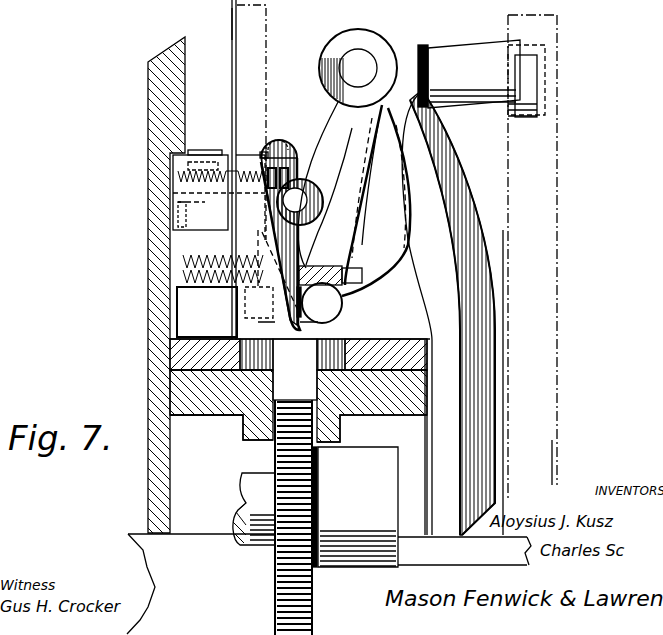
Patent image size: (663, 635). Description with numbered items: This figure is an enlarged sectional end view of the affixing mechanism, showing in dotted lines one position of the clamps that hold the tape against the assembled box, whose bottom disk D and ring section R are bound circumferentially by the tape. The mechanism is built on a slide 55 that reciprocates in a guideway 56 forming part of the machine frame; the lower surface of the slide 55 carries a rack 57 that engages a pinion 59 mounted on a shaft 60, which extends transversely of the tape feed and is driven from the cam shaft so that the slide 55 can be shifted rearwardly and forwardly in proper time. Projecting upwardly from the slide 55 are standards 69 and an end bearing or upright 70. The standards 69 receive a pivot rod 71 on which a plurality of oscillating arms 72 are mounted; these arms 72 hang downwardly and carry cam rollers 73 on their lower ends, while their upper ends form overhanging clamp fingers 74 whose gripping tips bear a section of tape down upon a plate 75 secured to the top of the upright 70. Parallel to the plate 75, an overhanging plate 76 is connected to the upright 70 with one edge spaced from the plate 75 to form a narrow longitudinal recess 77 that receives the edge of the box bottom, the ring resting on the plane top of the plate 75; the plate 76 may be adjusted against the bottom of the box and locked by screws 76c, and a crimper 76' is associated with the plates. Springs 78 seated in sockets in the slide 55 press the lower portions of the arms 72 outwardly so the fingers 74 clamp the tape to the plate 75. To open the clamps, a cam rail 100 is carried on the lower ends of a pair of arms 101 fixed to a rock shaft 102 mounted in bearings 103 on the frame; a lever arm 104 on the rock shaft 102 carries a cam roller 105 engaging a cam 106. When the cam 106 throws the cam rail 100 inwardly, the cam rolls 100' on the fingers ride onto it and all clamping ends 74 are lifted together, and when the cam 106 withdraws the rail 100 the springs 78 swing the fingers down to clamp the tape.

The disk D is at (231, 22).
The ring section R is at (270, 22).
The slide 55 is at (270, 348).
The guideway 56 is at (185, 352).
The rack 57 is at (295, 369).
The pinion 59 is at (293, 493).
The shaft 60 is at (248, 490).
The standards 69 is at (322, 200).
The end bearing or upright 70 is at (180, 257).
The pivot rod 71 is at (297, 203).
The oscillating arms 72 is at (312, 243).
The cam rollers 73 is at (286, 330).
The clamp fingers 74 is at (270, 150).
The plate 75 is at (288, 150).
The overhanging plate 76 is at (186, 189).
The cover plate 76' is at (167, 134).
The center and top screws 76c is at (298, 163).
The longitudinal recess 77 is at (232, 158).
The springs 78 is at (180, 273).
The cam rail 100 is at (346, 301).
The cam rolls 100' is at (232, 304).
The arms 101 is at (383, 190).
The rock shaft 102 is at (360, 44).
The bearings 103 is at (468, 240).
The lever arm 104 is at (446, 64).
The cam roller 105 is at (530, 60).
The cam 106 is at (545, 188).